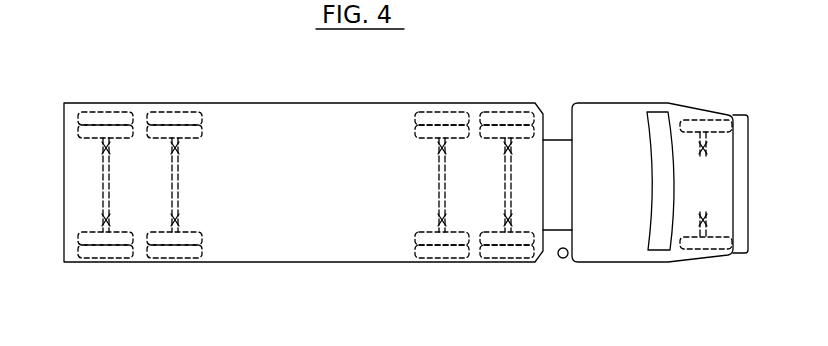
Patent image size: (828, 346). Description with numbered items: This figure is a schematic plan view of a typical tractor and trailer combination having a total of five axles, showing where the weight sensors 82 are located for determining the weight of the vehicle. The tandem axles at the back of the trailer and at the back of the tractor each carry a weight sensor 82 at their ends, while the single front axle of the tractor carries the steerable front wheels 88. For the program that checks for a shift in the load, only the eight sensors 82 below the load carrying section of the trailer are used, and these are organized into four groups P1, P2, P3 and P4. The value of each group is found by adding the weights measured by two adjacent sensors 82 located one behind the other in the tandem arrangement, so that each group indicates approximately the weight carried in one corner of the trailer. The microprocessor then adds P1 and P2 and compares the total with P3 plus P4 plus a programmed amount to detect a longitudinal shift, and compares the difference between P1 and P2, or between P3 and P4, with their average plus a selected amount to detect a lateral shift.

The weight sensor 82 is at (179, 152).
The front wheels 88 is at (692, 118).
The first sensor group P1 is at (533, 101).
The second sensor group P2 is at (533, 264).
The third sensor group P3 is at (200, 100).
The fourth sensor group P4 is at (200, 264).